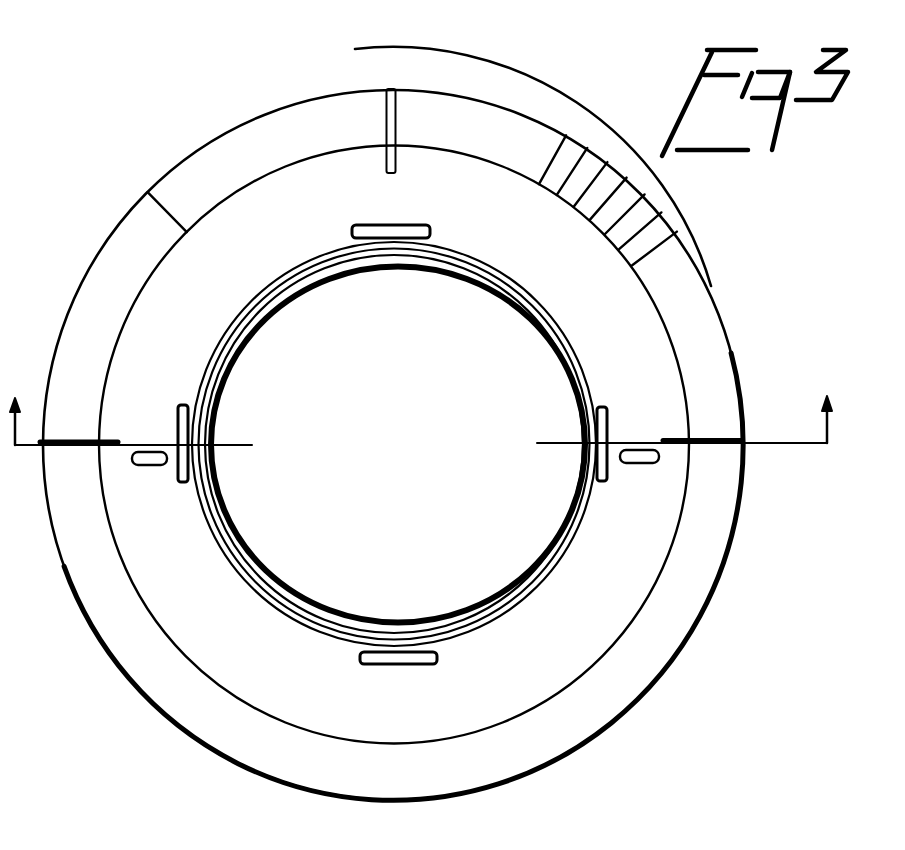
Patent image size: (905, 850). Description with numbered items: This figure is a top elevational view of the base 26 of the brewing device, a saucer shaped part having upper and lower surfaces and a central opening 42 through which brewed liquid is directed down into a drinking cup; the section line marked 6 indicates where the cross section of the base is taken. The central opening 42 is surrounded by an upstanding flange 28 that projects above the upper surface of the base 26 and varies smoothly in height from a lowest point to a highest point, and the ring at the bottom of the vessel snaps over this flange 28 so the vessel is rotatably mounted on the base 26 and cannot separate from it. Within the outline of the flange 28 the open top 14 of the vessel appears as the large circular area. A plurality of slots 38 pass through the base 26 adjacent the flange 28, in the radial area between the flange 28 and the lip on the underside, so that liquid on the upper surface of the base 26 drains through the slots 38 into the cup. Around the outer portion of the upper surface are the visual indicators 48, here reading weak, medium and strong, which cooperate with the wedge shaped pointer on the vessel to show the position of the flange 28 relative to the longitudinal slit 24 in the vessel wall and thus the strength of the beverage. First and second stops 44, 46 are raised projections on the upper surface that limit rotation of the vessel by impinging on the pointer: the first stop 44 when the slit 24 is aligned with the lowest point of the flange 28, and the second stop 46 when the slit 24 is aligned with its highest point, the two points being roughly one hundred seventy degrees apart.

The section line 6- 6 is at (421, 444).
The open top 14 is at (448, 387).
The longitudinal slit 24 is at (252, 563).
The base 26 is at (728, 313).
The upstanding flange 28 is at (267, 602).
The slots 38 is at (183, 407).
The central opening 42 is at (356, 541).
The first stop 44 is at (148, 465).
The second stop 46 is at (647, 461).
The visual indicators 48 is at (123, 230).